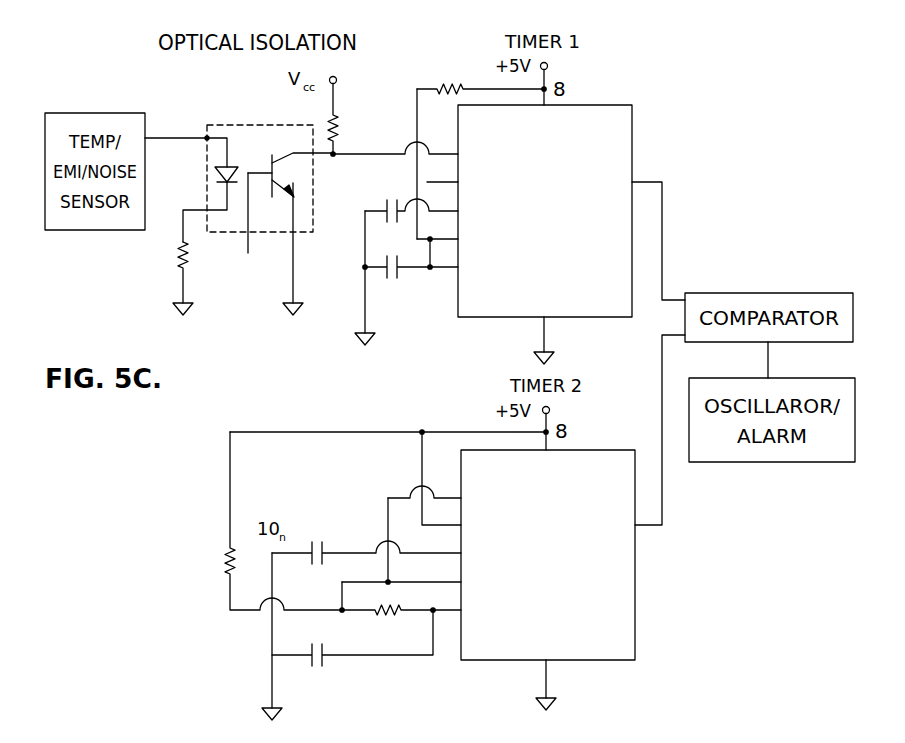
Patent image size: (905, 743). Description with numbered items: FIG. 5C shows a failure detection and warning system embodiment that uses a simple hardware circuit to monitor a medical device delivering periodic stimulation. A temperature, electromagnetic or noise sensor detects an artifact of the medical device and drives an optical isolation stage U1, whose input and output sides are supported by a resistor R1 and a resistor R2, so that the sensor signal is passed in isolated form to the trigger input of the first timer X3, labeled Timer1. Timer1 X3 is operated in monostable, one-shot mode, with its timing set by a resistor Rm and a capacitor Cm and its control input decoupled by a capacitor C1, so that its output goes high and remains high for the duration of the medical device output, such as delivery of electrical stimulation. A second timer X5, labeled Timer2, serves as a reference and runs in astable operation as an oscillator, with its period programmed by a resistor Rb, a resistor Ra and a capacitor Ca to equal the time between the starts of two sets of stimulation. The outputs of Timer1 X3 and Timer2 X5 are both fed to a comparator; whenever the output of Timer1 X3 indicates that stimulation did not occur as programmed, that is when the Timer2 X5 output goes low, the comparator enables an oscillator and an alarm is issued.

The optical isolator A4N25 U1 is at (258, 206).
The resistor R1 is at (194, 278).
The resistor R2 is at (348, 119).
The resistor Rm is at (480, 77).
The capacitor C1 (10n) C1 is at (401, 196).
The capacitor Cm is at (406, 278).
The 555D timer 1 X3 is at (548, 213).
The 555D timer 2 X5 is at (549, 556).
The resistor Rb is at (269, 521).
The resistor Ra is at (401, 627).
The capacitor Ca is at (347, 636).